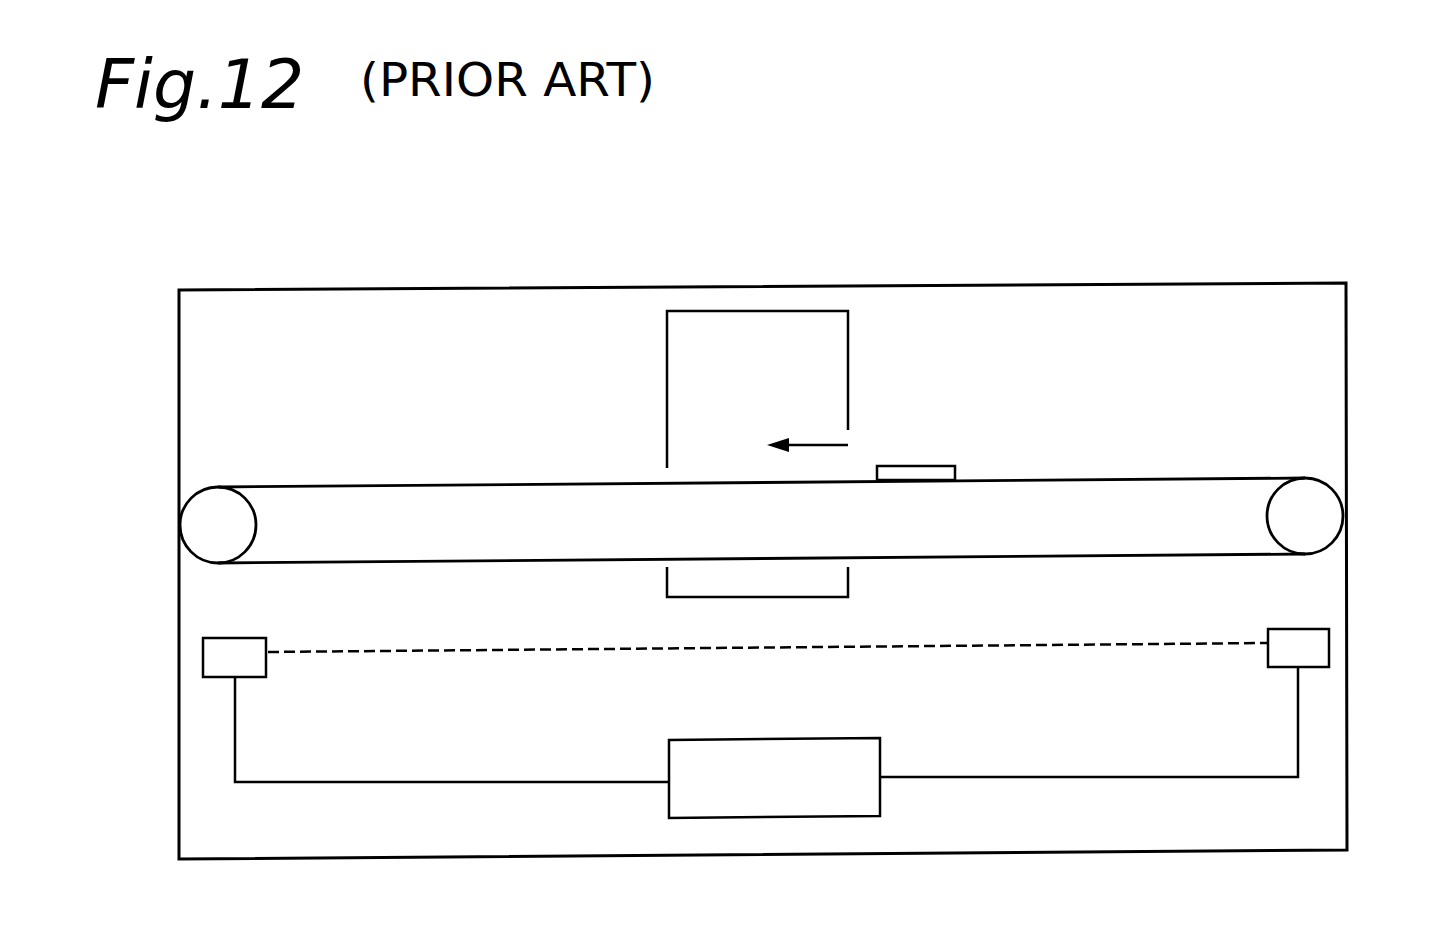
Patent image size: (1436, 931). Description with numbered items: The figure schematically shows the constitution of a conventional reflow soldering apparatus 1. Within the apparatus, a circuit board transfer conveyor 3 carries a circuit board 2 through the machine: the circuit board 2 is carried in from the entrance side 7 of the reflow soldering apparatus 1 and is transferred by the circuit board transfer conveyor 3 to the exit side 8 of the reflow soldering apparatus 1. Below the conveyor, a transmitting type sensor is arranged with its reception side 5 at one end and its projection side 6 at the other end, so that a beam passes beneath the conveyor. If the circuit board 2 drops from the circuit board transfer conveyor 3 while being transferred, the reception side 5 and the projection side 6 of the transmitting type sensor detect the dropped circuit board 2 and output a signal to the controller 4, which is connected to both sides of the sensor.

The reflow soldering apparatus 1 is at (441, 283).
The circuit board 2 is at (917, 466).
The circuit board transfer conveyor 3 is at (1103, 479).
The controller 4 is at (820, 740).
The reception side of transmitting type sensor 5 is at (233, 638).
The projection side of transmitting type sensor 6 is at (1283, 629).
The entrance side 7 is at (1315, 437).
The exit side 8 is at (200, 441).